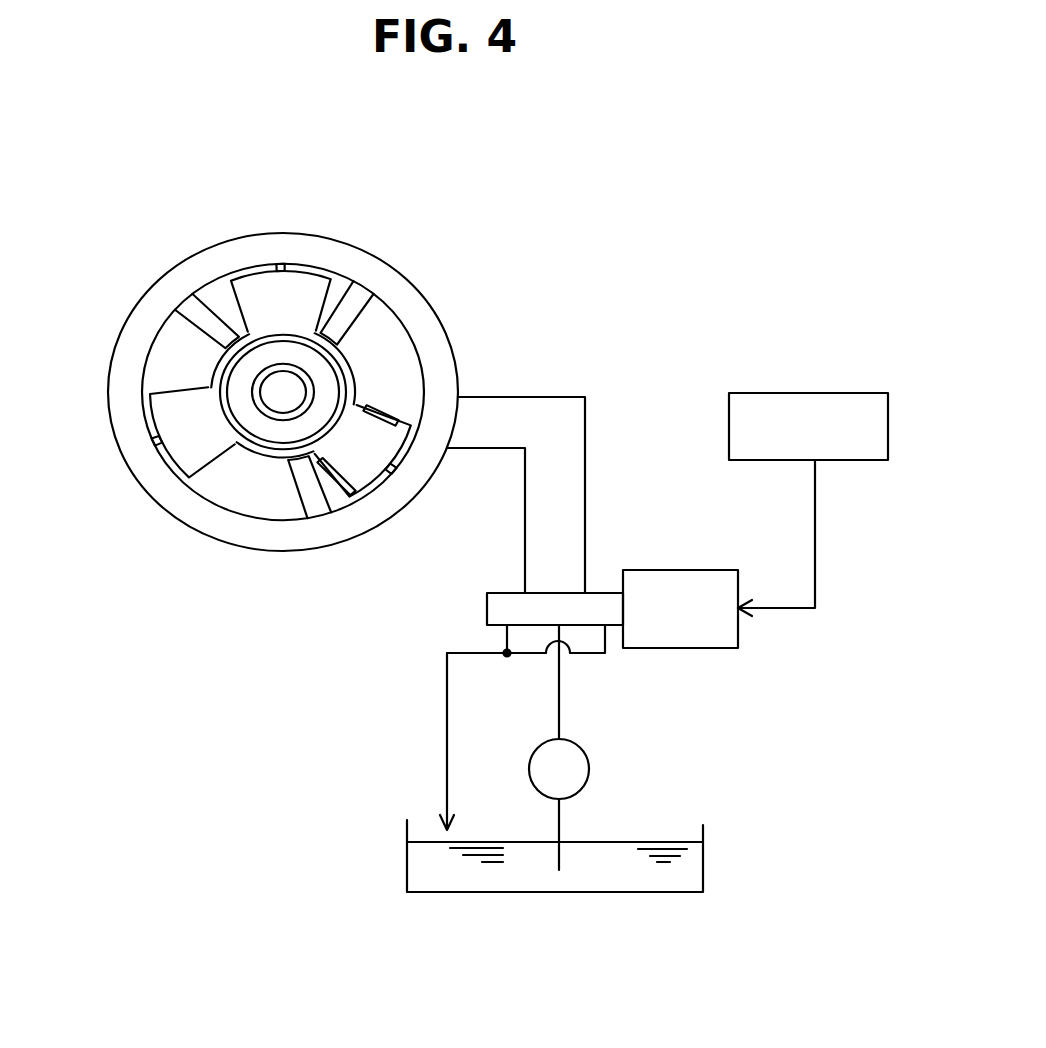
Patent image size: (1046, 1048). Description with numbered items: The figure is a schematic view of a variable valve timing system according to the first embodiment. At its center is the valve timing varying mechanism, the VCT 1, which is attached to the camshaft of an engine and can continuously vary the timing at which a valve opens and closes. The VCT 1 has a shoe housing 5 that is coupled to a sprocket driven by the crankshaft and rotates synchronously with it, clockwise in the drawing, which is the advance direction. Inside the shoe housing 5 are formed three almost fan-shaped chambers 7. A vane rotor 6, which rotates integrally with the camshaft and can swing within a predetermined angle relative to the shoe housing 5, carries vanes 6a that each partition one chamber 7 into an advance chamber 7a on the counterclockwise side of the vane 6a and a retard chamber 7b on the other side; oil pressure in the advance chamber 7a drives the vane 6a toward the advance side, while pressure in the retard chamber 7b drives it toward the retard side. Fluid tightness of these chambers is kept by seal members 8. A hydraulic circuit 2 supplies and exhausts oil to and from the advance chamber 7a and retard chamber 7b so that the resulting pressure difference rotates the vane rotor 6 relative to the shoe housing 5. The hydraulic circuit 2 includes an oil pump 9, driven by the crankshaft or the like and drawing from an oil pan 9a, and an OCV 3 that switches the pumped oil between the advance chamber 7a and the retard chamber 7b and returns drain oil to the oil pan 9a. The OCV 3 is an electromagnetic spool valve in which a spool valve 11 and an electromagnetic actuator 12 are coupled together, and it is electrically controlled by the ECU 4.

The valve timing varying mechanism (VCT) 1 is at (141, 262).
The hydraulic circuit 2 is at (426, 720).
The OCV 3 is at (631, 550).
The ECU 4 is at (818, 393).
The shoe housing 5 is at (380, 285).
The vane rotor 6 is at (360, 358).
The vane 6a is at (157, 438).
The chamber 7 is at (153, 387).
The advance chamber 7a is at (220, 297).
The retard chamber 7b is at (153, 408).
The seal member 8 is at (278, 265).
The oil pump 9 is at (590, 772).
The oil pan 9a is at (705, 853).
The spool valve 11 is at (506, 574).
The electromagnetic actuator 12 is at (683, 664).